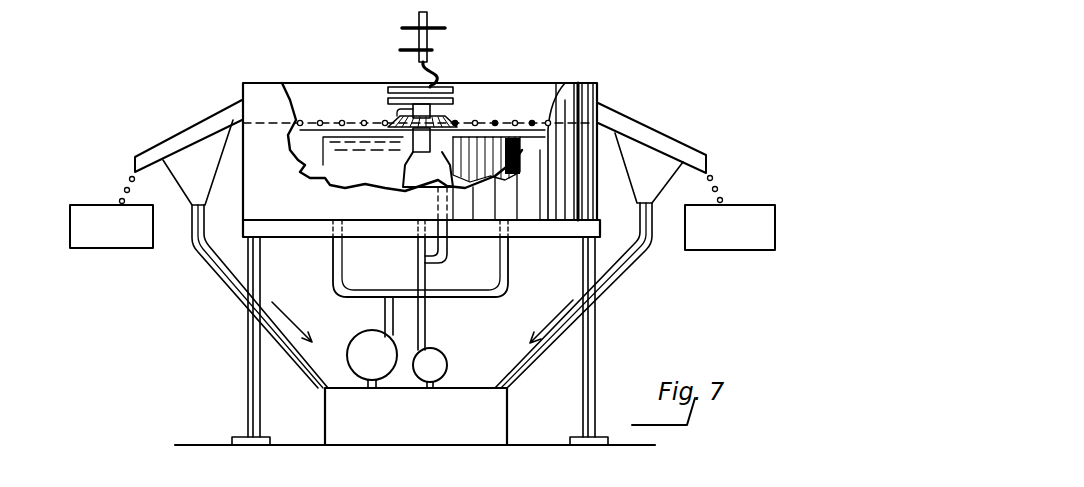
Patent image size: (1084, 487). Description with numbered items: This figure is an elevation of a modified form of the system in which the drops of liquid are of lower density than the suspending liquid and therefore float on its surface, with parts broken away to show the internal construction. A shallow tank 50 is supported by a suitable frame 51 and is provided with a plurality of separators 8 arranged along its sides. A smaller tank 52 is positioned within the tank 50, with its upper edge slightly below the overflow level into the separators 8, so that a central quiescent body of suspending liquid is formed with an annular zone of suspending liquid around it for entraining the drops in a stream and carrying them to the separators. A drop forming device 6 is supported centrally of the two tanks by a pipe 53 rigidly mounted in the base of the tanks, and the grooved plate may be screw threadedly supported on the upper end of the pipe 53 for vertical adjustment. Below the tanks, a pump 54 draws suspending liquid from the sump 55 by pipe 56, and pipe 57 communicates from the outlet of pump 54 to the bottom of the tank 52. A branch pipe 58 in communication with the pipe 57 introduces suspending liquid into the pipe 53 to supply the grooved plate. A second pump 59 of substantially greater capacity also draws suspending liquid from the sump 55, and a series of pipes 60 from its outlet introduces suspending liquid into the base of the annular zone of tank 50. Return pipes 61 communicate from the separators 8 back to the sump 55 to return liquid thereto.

The shallow tank 50 is at (257, 96).
The smaller tank 52 is at (350, 132).
The drop forming device 6 is at (440, 72).
The pipe 53 is at (404, 170).
The separators 8 is at (193, 126).
The return pipes 61 is at (238, 297).
The frame 51 is at (583, 276).
The pipes 60 is at (330, 272).
The branch pipe 58 is at (438, 276).
The pipe 57 is at (426, 327).
The second pump 59 is at (350, 348).
The pump 54 is at (444, 352).
The pipe 56 is at (447, 380).
The sump 55 is at (500, 432).